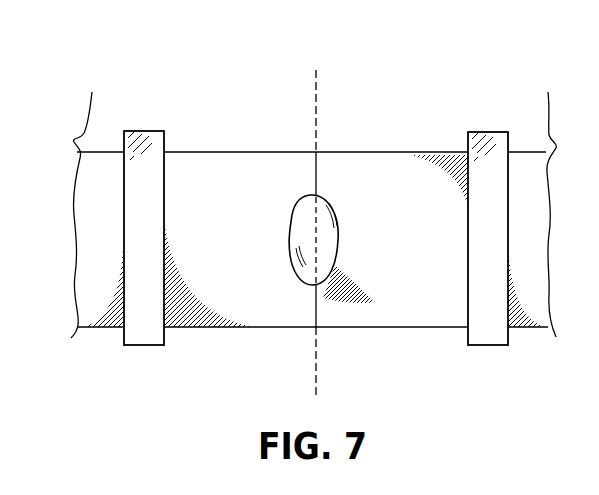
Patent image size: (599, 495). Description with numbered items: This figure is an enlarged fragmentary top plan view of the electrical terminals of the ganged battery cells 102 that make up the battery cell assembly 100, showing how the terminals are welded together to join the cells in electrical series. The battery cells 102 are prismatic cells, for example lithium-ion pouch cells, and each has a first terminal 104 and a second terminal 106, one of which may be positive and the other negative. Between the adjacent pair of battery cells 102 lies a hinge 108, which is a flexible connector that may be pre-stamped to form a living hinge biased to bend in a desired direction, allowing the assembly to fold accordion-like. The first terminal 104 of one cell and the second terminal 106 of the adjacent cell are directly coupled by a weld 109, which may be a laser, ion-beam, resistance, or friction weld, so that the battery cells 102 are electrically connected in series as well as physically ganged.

The battery cell assembly 100 is at (441, 90).
The battery cells 102 is at (316, 204).
The first terminal 104 is at (438, 152).
The second terminal 106 is at (232, 152).
The hinge 108 is at (327, 148).
The weld 109 is at (338, 258).